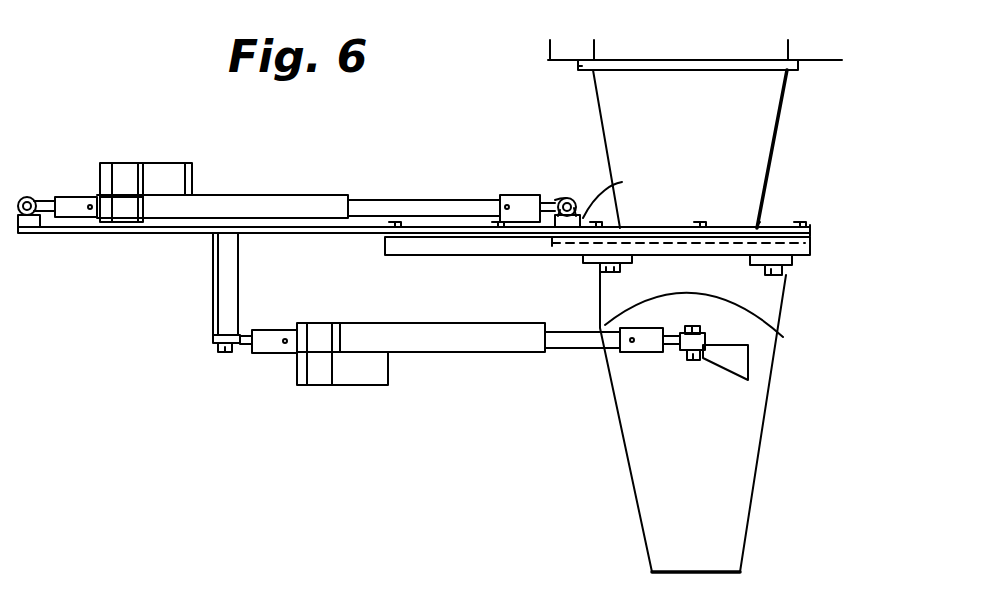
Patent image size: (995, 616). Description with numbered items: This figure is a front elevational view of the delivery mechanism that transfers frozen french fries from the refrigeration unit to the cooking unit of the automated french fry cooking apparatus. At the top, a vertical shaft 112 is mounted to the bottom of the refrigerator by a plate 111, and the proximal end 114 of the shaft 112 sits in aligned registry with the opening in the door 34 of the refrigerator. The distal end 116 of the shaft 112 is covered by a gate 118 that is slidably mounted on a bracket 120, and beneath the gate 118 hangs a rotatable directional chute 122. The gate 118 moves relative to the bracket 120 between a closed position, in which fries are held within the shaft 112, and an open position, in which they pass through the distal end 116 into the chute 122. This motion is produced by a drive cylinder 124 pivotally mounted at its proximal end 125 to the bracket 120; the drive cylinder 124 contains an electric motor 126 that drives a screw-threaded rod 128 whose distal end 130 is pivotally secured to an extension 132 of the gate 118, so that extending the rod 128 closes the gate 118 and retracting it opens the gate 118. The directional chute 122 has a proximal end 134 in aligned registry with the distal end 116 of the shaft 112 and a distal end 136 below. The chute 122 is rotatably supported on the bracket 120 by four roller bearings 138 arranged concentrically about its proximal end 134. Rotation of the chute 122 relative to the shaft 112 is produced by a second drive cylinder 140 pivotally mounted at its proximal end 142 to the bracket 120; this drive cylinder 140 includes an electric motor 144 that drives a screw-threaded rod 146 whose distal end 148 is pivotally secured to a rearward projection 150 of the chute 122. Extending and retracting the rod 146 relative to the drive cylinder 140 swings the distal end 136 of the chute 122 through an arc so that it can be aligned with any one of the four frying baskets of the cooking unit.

The door 34 is at (812, 58).
The plate 111 is at (578, 64).
The vertical shaft 112 is at (778, 105).
The proximal end 114 is at (790, 50).
The distal end 116 is at (762, 218).
The gate 118 is at (813, 232).
The bracket 120 is at (425, 245).
The directional chute 122 is at (755, 433).
The drive cylinder 124 is at (268, 200).
The proximal end 125 is at (38, 197).
The electric motor 126 is at (160, 172).
The screw-threaded rod 128 is at (400, 207).
The distal end 130 is at (567, 198).
The extension 132 is at (622, 182).
The proximal end 134 is at (785, 290).
The distal end 136 is at (730, 555).
The roller bearings 138 is at (590, 260).
The drive cylinder 140 is at (462, 343).
The proximal end 142 is at (212, 340).
The electric motor 144 is at (358, 375).
The screw-threaded rod 146 is at (580, 340).
The distal end 148 is at (678, 350).
The rearward projection 150 is at (738, 358).